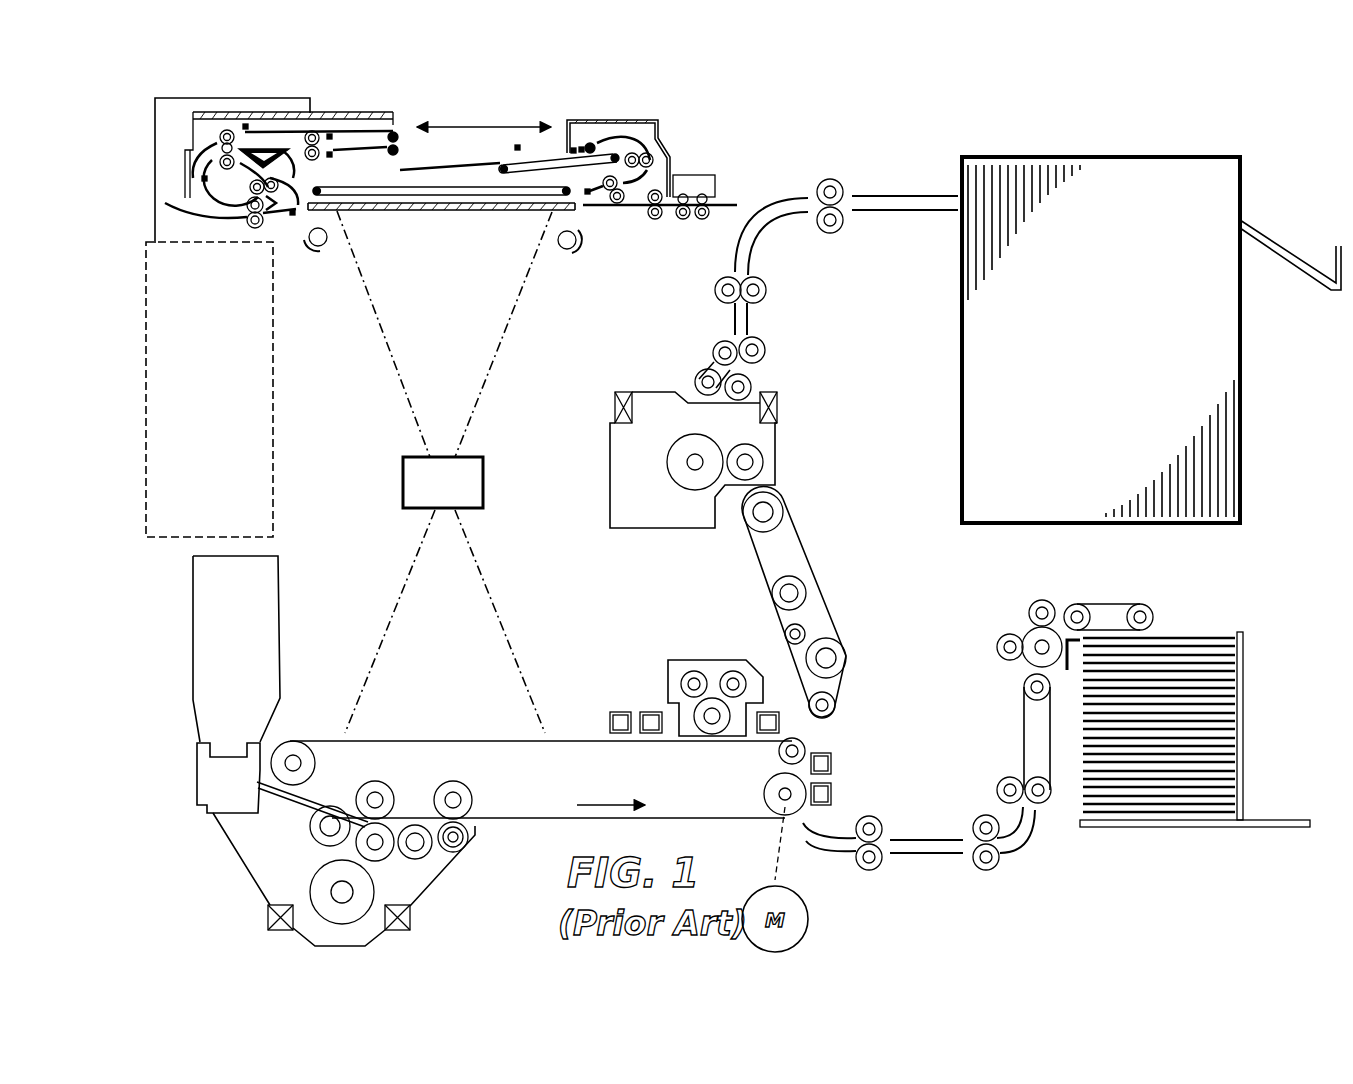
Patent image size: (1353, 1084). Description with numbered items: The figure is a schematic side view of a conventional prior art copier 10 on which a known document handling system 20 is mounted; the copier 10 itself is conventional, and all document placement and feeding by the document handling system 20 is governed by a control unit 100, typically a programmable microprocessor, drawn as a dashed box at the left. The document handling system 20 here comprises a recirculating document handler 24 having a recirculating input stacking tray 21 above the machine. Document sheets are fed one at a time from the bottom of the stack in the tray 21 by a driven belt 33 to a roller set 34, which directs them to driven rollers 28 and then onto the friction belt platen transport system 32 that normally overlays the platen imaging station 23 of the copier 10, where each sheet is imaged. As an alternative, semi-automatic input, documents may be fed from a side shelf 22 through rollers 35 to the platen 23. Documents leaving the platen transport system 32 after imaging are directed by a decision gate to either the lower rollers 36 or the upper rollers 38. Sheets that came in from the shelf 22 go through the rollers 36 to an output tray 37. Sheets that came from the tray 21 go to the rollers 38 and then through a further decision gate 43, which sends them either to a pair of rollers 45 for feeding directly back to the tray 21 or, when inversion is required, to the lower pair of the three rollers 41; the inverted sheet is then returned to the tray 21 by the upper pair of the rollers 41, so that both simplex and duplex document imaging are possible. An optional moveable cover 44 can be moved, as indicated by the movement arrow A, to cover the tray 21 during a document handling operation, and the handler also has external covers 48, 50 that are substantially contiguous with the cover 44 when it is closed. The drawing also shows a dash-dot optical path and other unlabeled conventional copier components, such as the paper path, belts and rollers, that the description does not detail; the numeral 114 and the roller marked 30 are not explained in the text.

The copier 10 is at (140, 330).
The document handling system 20 is at (691, 114).
The recirculating input stacking tray 21 is at (473, 152).
The shelf 22 is at (727, 198).
The platen imaging station 23 is at (443, 212).
The recirculating document handler 24 is at (551, 150).
The driven rollers 28 is at (617, 208).
The idler roller 30 is at (327, 247).
The friction belt platen transport system 32 is at (385, 190).
The driven belt 33 is at (613, 137).
The roller set 34 is at (654, 160).
The rollers 35 is at (653, 218).
The lower rollers 36 is at (255, 228).
The output tray 37 is at (173, 202).
The upper rollers 38 is at (281, 182).
The three rollers 41 is at (210, 150).
The decision gate 43 is at (266, 146).
The moveable cover 44 is at (362, 125).
The pair of rollers 45 is at (313, 137).
The external cover 48 is at (630, 120).
The external cover 50 is at (193, 120).
The control unit 100 is at (273, 316).
The light path / idler roller 114 is at (338, 213).
The movement arrow A is at (443, 123).